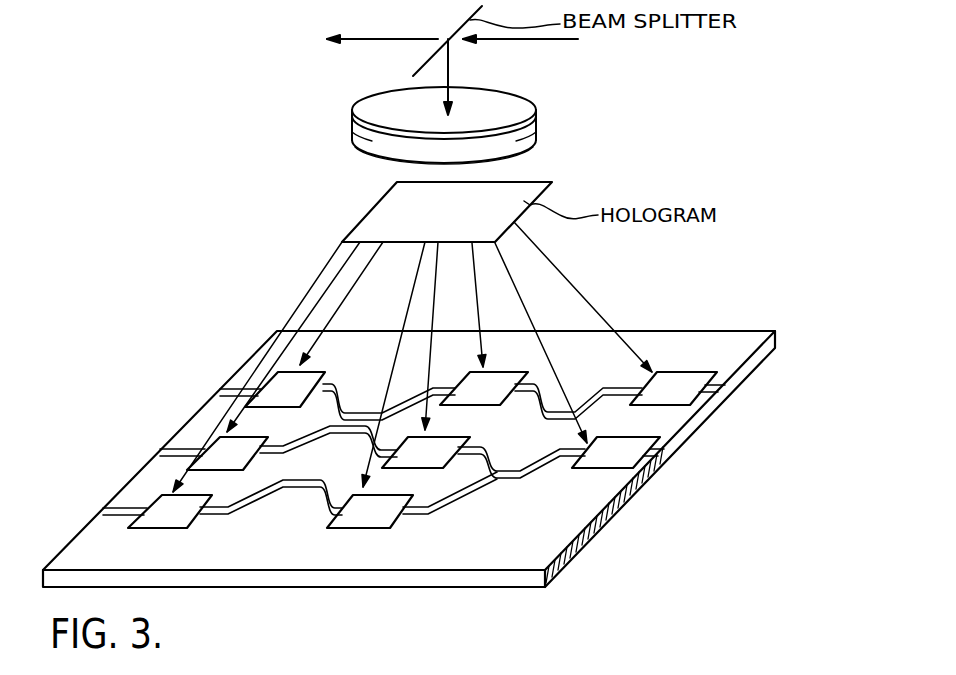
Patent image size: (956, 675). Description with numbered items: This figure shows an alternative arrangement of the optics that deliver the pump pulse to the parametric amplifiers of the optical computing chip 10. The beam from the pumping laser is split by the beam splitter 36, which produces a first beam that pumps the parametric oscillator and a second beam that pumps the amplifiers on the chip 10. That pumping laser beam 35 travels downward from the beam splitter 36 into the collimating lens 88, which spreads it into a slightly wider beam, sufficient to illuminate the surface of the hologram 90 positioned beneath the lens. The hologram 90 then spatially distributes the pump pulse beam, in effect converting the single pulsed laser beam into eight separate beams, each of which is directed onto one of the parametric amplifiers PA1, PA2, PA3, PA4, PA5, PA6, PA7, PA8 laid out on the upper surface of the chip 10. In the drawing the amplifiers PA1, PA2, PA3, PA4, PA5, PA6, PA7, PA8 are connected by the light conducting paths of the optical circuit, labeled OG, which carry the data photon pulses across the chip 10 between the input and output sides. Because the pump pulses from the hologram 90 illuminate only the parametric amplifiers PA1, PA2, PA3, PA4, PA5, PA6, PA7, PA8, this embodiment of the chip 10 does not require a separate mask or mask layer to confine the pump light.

The optical computing chip 10 is at (558, 515).
The pumping laser beam 35 is at (449, 68).
The beam splitter 36 is at (427, 63).
The collimating lens 88 is at (346, 160).
The hologram 90 is at (358, 226).
The parametric amplifier PA1 is at (285, 389).
The parametric amplifier PA2 is at (227, 453).
The parametric amplifier PA3 is at (170, 511).
The parametric amplifier PA4 is at (484, 388).
The parametric amplifier PA5 is at (426, 452).
The parametric amplifier PA6 is at (370, 511).
The parametric amplifier PA7 is at (673, 388).
The parametric amplifier PA8 is at (616, 452).
The optical waveguide OG is at (414, 449).